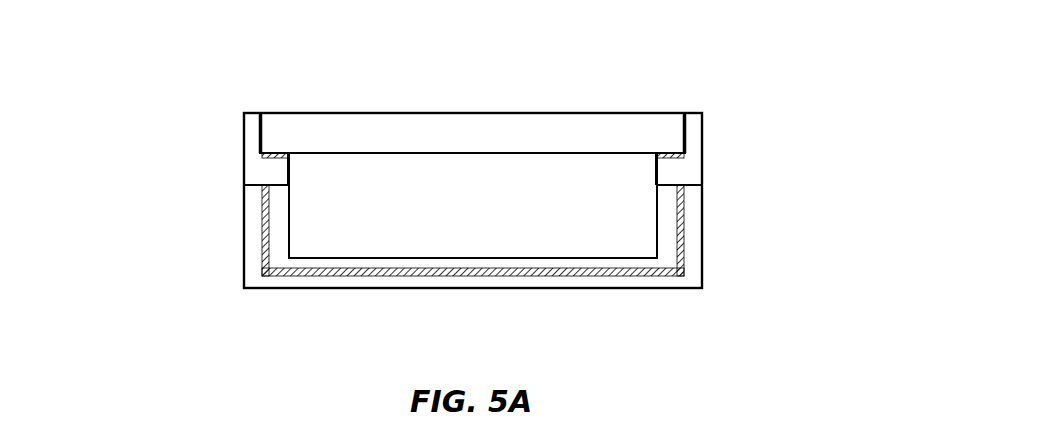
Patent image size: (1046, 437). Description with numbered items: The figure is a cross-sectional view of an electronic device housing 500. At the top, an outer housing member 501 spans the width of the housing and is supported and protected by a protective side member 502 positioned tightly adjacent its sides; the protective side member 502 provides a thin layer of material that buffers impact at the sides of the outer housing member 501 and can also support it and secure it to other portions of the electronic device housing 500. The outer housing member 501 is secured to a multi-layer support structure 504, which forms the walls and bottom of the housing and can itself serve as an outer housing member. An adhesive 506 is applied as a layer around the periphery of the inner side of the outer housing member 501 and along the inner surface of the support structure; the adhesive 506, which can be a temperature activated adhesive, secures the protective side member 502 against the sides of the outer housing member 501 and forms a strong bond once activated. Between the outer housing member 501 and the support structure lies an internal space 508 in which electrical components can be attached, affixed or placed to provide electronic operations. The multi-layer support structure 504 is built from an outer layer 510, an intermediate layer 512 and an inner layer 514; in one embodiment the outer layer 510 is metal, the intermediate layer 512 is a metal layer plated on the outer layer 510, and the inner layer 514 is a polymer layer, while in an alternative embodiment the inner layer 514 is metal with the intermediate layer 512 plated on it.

The electronic device housing 500 is at (216, 73).
The outer housing member 501 is at (472, 133).
The protective side member 502 is at (243, 152).
The multi-layer support structure 504 is at (243, 228).
The adhesive 506 is at (292, 154).
The internal space 508 is at (473, 205).
The outer layer 510 is at (261, 110).
The intermediate layer 512 is at (566, 273).
The inner layer 514 is at (593, 263).